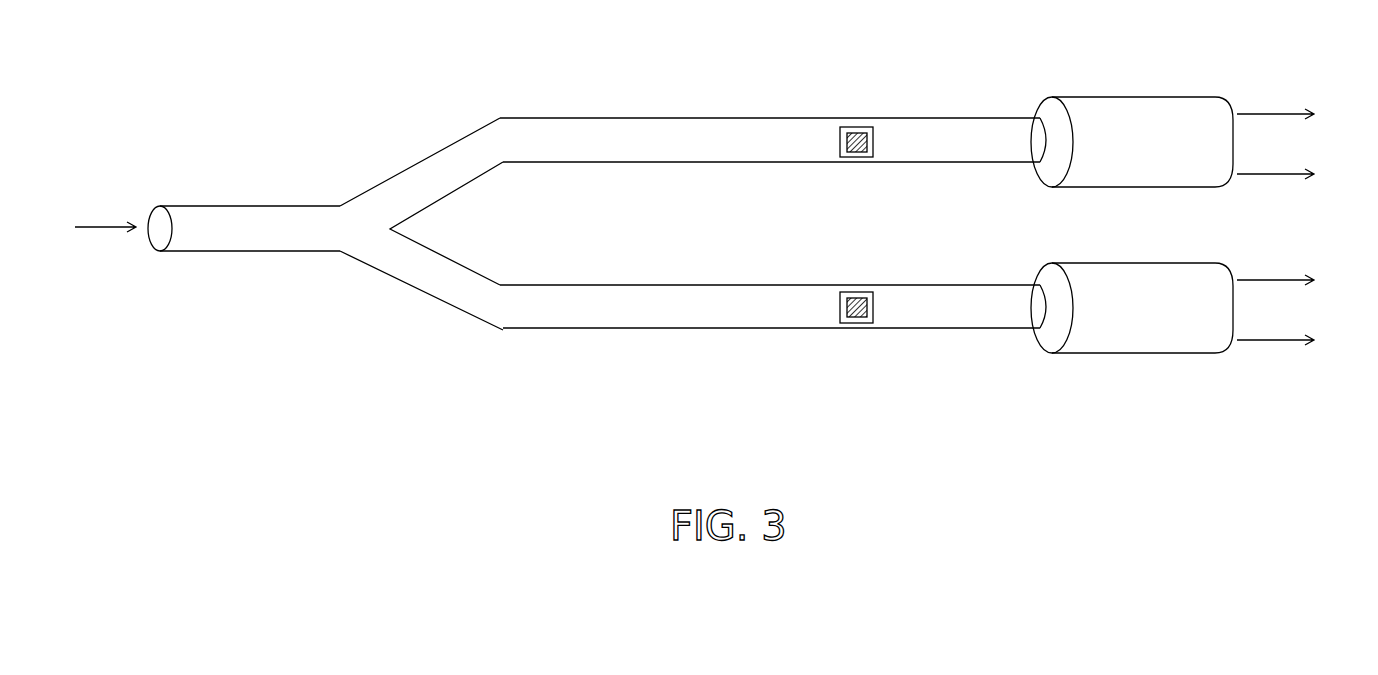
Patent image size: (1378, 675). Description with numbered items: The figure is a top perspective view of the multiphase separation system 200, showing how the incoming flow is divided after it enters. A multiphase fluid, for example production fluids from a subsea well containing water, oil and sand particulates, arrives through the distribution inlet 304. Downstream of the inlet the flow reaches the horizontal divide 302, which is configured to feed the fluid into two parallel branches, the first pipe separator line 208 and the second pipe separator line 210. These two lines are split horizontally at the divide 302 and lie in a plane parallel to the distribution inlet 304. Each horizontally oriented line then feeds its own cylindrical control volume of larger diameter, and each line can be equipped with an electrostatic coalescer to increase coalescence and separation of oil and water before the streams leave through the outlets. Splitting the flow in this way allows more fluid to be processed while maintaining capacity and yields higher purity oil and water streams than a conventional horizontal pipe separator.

The multiphase separation system 200 is at (757, 494).
The first pipe separator line 208 is at (556, 127).
The second pipe separator line 210 is at (555, 313).
The horizontal divide 302 is at (422, 225).
The distribution inlet 304 is at (193, 204).